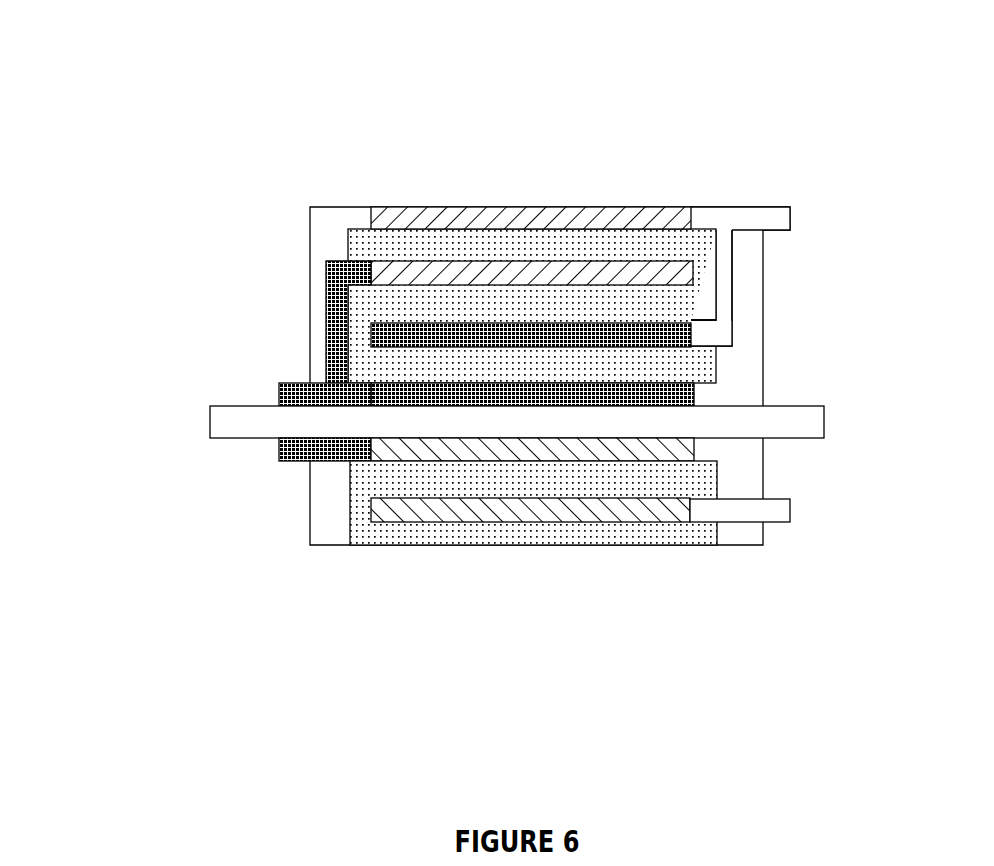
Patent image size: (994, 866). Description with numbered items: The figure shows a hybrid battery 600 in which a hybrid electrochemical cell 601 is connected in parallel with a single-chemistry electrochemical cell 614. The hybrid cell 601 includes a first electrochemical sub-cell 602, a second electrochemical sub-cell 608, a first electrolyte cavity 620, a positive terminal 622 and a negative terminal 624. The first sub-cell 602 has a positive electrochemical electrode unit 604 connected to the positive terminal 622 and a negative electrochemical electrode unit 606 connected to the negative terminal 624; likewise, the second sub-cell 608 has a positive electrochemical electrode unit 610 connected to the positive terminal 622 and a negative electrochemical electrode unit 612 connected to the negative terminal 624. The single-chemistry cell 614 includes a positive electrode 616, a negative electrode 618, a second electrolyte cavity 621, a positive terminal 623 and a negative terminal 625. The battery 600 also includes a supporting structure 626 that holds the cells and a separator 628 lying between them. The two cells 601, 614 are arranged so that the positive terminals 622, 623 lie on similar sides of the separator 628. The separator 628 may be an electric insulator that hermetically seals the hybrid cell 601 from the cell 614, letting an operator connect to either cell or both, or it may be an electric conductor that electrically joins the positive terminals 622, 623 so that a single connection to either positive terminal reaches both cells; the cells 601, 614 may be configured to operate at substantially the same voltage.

The hybrid battery 600 is at (196, 80).
The hybrid electrochemical cell 601 is at (153, 201).
The first electrochemical sub-cell 602 is at (248, 201).
The positive electrochemical electrode unit 604 is at (587, 268).
The negative electrochemical electrode unit 606 is at (517, 216).
The second electrochemical sub-cell 608 is at (248, 314).
The positive electrochemical electrode unit 610 is at (703, 390).
The negative electrochemical electrode unit 612 is at (692, 335).
The single-chemistry electrochemical cell 614 is at (247, 446).
The positive electrode 616 is at (578, 450).
The negative electrode 618 is at (509, 510).
The first electrolyte cavity 620 is at (378, 245).
The second electrolyte cavity 621 is at (394, 538).
The positive terminal 622 is at (341, 264).
The positive terminal 623 is at (295, 461).
The negative terminal 624 is at (755, 222).
The negative terminal 625 is at (773, 522).
The supporting structure 626 is at (752, 477).
The separator 628 is at (817, 415).